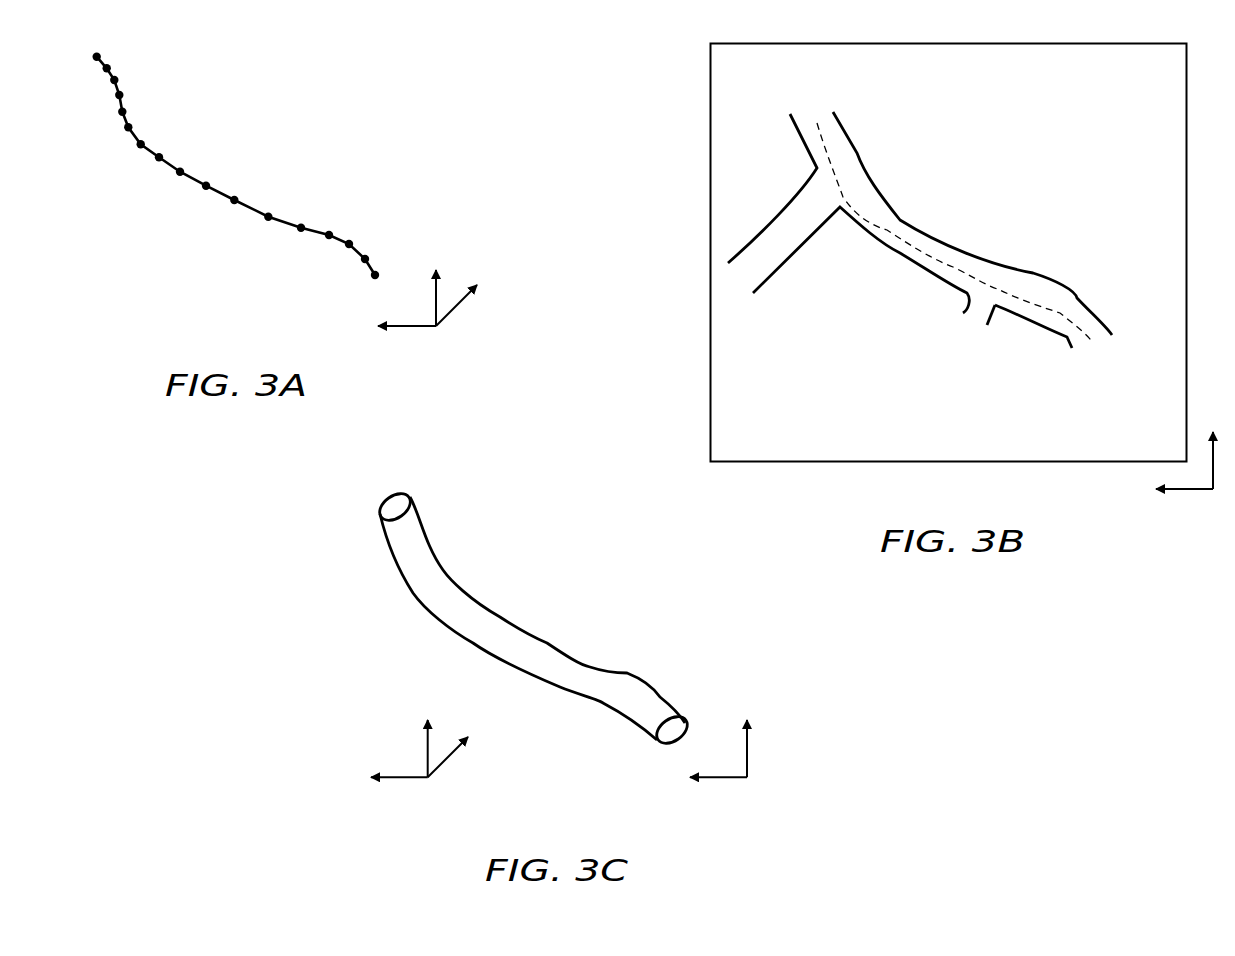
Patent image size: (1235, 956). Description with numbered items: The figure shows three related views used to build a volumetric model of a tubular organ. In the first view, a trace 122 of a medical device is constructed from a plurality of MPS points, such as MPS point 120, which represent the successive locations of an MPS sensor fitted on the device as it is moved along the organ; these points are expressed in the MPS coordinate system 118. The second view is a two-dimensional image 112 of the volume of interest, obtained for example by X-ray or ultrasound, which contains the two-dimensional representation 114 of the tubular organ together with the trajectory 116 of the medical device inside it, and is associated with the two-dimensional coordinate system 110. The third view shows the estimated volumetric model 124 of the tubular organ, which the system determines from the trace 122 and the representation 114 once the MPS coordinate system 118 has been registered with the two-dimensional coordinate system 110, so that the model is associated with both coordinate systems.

In FIG. 3B, the 2D coordinate system 110 is at (1188, 491).
In FIG. 3C, the 2D coordinate system 110 is at (722, 778).
In FIG. 3B, the 2D image 112 is at (710, 95).
In FIG. 3B, the 2D representation of tubular organ 114 is at (858, 143).
In FIG. 3B, the trajectory of the medical device 116 is at (997, 290).
In FIG. 3A, the MPS coordinate system 118 is at (412, 327).
In FIG. 3C, the MPS coordinate system 118 is at (403, 778).
In FIG. 3A, the MPS point 120 is at (206, 184).
In FIG. 3A, the trace 122 is at (256, 206).
In FIG. 3C, the estimated volumetric model 124 is at (628, 672).